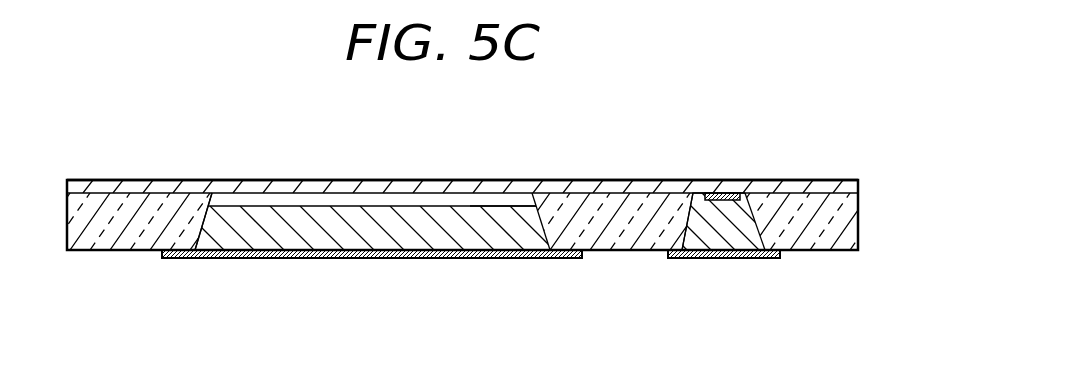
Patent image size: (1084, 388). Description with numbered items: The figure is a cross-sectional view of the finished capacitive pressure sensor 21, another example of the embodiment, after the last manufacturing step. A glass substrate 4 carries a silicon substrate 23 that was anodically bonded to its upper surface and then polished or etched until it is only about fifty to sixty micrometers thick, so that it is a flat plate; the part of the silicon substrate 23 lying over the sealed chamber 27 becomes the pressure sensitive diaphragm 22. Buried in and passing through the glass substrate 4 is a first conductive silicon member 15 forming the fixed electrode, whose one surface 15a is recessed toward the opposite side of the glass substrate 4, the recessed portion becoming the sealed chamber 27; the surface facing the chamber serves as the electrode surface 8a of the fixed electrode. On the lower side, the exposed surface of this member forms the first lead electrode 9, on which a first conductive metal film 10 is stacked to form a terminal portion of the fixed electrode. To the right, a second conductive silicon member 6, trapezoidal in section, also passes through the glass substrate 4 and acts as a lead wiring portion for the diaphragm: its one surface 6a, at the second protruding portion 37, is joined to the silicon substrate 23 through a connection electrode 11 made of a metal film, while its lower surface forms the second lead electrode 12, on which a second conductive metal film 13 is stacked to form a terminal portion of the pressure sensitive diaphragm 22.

The glass substrate 4 is at (853, 236).
The silicon substrate 23 is at (850, 185).
The pressure sensitive diaphragm 22 is at (343, 185).
The capacitive pressure sensor 21 is at (843, 158).
The first conductive silicon member 15 is at (301, 243).
The one surface of the first conductive silicon member 15a is at (255, 203).
The electrode surface 8a is at (423, 205).
The sealed chamber 27 is at (502, 190).
The first lead electrode 9 is at (450, 258).
The first conductive metal film 10 is at (585, 257).
The second conductive silicon member 6 is at (718, 263).
The second protruding portion 37 is at (732, 237).
The one surface of the second conductive silicon member 6a is at (700, 192).
The connection electrode 11 is at (735, 193).
The second conductive metal film 13 is at (782, 255).
The second lead electrode 12 is at (683, 252).